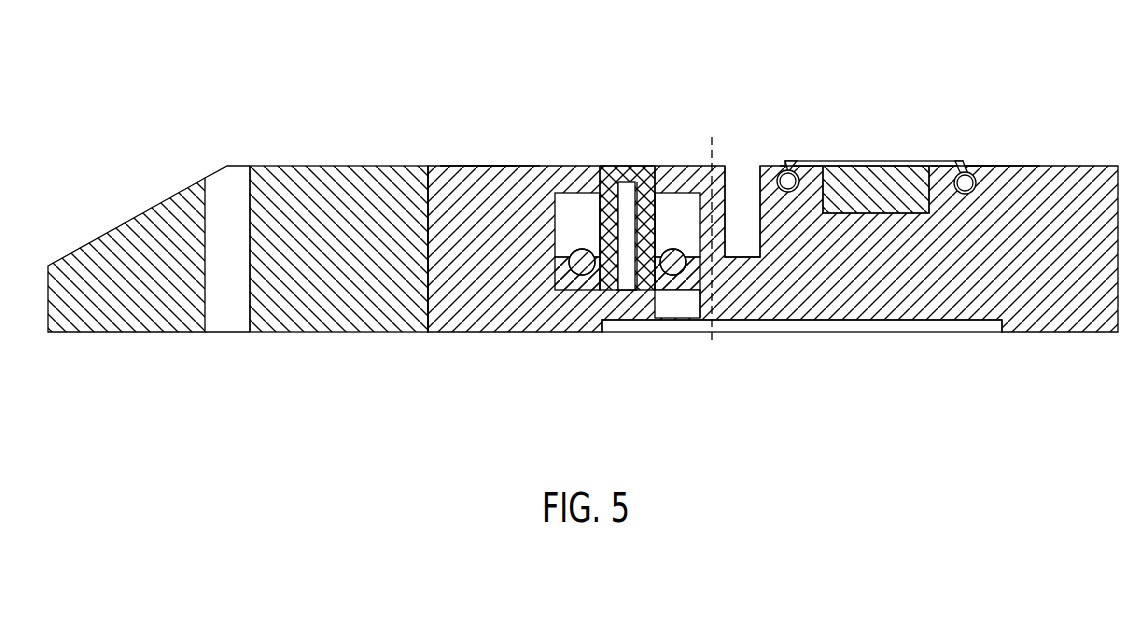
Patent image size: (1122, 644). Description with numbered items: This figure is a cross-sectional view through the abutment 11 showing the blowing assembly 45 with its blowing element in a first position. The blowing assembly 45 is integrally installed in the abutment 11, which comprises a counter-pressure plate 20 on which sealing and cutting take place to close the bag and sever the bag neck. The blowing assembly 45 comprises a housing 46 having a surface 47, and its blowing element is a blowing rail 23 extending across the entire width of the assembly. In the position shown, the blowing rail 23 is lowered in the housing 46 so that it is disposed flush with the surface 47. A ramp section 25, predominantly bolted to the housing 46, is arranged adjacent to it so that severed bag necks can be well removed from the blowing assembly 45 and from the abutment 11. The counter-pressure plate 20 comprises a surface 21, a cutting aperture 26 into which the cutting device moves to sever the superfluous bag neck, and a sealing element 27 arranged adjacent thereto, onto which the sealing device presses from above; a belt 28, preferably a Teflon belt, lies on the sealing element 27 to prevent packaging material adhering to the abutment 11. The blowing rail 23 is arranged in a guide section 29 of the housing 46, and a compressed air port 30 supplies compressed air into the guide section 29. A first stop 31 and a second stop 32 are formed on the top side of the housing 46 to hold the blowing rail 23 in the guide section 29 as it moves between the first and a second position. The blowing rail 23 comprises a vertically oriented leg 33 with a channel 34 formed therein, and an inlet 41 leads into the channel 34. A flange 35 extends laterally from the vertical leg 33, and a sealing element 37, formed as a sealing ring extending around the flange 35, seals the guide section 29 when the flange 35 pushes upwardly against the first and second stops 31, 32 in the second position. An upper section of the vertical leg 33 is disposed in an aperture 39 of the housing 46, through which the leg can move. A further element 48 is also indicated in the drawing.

The abutment 11 is at (847, 88).
The counter-pressure plate 20 is at (1088, 172).
The surface 21 is at (1003, 172).
The blowing rail 23 is at (646, 182).
The ramp section 25 is at (313, 176).
The cutting aperture 26 is at (736, 178).
The sealing element 27 is at (889, 162).
The belt 28 is at (940, 160).
The guide section 29 is at (712, 302).
The compressed air port 30 is at (684, 312).
The first stop 31 is at (568, 182).
The second stop 32 is at (680, 182).
The vertical leg 33 is at (607, 218).
The channel 34 is at (617, 188).
The flange 35 is at (570, 292).
The sealing element 37 is at (575, 263).
The aperture 39 is at (652, 188).
The inlet 41 is at (631, 292).
The blowing assembly 45 is at (483, 147).
The housing 46 is at (495, 172).
The surface 47 is at (455, 172).
The notch edge 48 is at (713, 305).